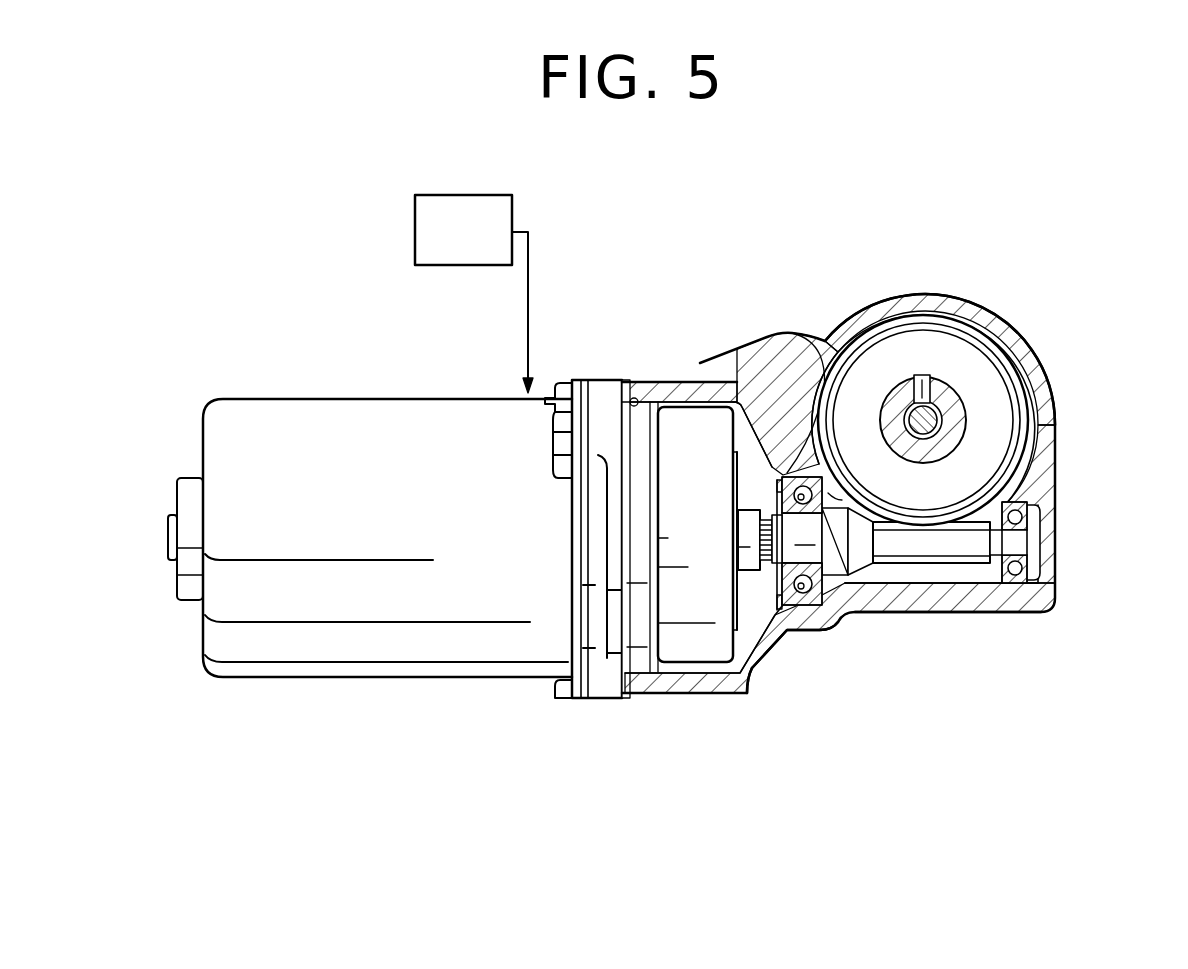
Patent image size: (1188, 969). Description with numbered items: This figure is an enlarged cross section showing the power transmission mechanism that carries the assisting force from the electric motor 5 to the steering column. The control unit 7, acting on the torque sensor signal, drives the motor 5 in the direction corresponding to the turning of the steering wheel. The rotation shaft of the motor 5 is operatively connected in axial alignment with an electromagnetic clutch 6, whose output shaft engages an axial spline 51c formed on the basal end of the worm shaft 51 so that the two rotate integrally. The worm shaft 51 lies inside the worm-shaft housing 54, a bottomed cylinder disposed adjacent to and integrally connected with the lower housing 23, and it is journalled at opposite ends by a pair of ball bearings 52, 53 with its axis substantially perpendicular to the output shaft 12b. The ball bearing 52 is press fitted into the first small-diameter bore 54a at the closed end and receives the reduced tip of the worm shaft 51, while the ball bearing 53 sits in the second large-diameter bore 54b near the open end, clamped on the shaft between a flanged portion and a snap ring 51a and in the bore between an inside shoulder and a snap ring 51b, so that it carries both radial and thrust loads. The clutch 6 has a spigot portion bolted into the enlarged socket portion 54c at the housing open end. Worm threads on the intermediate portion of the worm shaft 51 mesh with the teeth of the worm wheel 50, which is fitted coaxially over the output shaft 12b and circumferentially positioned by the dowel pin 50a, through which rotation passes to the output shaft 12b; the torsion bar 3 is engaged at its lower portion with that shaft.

The torsion bar 3 is at (943, 416).
The electric motor 5 is at (345, 412).
The electromagnetic clutch 6 is at (683, 427).
The control unit 7 is at (478, 247).
The output shaft 12b is at (888, 397).
The lower housing 23 is at (1030, 356).
The worm wheel 50 is at (965, 340).
The dowel pin 50a is at (919, 375).
The worm shaft 51 is at (921, 560).
The snap ring 51a is at (776, 475).
The snap ring 51b is at (785, 478).
The axial spline 51c is at (748, 683).
The ball bearing 52 is at (1022, 520).
The ball bearing 53 is at (813, 607).
The worm-shaft housing 54 is at (1030, 598).
The first small-diameter bore 54a is at (982, 587).
The second large-diameter bore 54b is at (843, 630).
The enlarged socket portion 54c is at (636, 382).